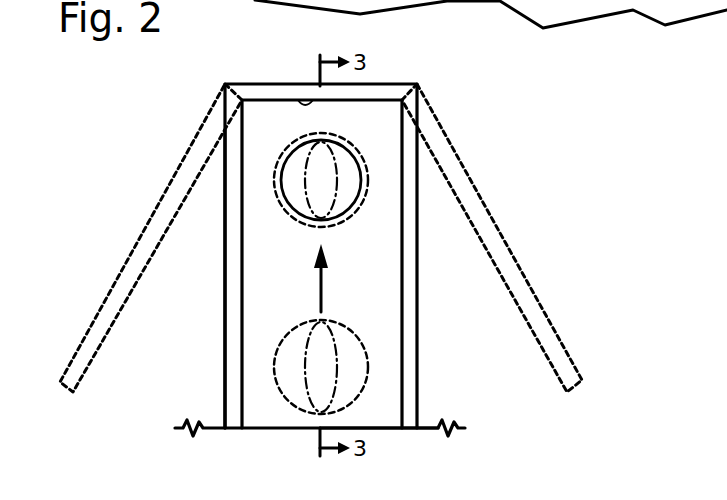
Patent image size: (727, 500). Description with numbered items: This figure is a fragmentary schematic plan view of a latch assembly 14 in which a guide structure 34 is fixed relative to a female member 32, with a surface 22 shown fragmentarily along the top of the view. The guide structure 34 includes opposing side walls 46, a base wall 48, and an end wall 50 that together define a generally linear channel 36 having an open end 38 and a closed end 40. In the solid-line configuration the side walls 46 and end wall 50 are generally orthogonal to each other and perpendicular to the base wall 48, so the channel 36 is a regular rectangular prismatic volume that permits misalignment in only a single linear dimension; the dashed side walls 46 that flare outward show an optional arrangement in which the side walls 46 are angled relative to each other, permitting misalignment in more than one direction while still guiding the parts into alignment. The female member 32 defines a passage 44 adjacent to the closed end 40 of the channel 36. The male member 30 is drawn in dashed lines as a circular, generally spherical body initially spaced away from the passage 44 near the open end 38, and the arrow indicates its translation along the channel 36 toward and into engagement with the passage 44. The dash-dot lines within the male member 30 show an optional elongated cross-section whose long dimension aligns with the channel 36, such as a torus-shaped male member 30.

The latch assembly 14 is at (103, 86).
The ground surface 22 is at (491, 14).
The male member 30 is at (355, 146).
The female member 32 is at (282, 112).
The guide structure 34 is at (114, 274).
The channel 36 is at (381, 440).
The open end 38 is at (272, 432).
The closed end 40 is at (298, 100).
The passage 44 is at (347, 195).
The opposing side walls 46 is at (165, 192).
The base wall 48 is at (282, 293).
The end wall 50 is at (392, 82).